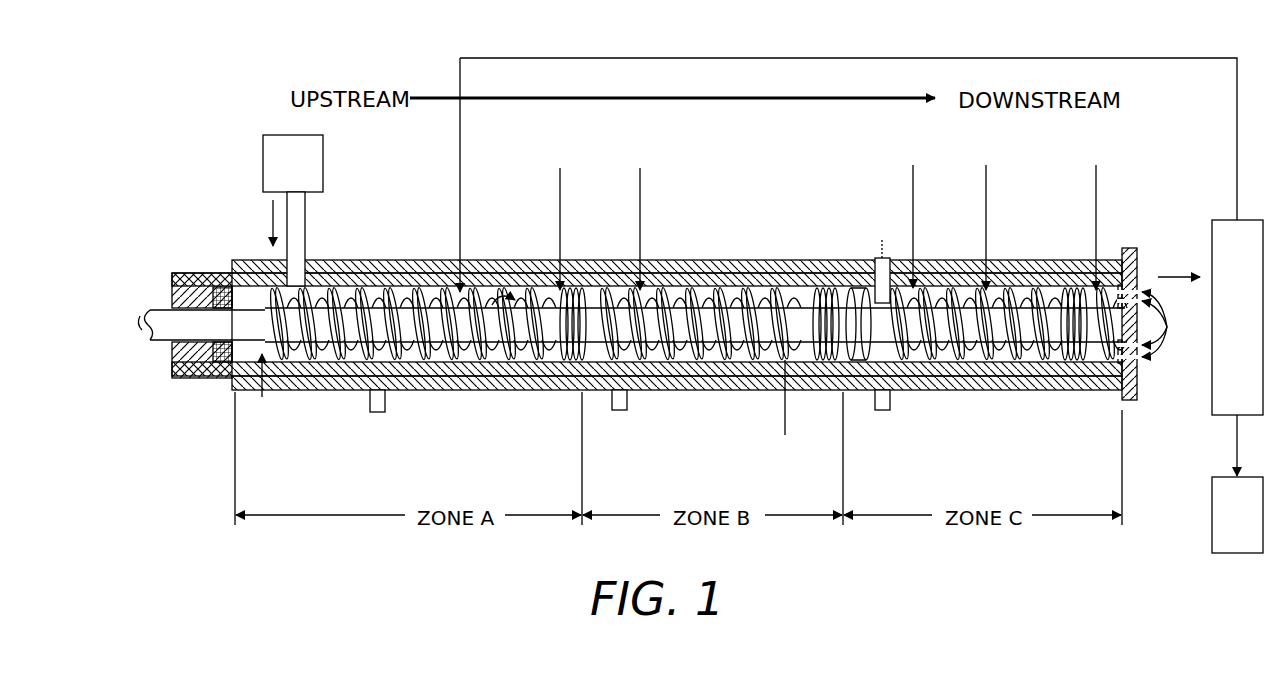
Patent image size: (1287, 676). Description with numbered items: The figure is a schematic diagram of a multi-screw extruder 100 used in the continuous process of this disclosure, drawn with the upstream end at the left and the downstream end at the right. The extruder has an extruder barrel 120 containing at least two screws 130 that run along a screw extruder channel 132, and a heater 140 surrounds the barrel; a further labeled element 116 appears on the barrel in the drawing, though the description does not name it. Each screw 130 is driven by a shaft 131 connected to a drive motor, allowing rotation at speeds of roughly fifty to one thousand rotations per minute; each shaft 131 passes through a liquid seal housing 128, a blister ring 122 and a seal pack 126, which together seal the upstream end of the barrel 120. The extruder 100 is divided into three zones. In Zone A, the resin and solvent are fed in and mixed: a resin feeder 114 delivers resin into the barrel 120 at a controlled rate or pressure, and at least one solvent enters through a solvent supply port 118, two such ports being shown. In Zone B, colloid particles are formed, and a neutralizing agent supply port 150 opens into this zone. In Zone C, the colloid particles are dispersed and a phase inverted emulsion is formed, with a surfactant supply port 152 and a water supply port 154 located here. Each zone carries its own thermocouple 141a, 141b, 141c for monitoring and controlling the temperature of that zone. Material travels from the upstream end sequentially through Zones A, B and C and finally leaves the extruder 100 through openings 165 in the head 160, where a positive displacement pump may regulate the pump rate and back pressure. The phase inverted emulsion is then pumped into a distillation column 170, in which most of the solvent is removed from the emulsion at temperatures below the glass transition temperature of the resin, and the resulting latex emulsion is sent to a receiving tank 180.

The multi-screw extruder 100 is at (230, 118).
The resin feeder 114 is at (263, 172).
The barrel 116 is at (560, 398).
The solvent supply port 118 is at (460, 183).
The extruder barrel 120 is at (198, 271).
The blister ring 122 is at (212, 302).
The seal pack 126 is at (233, 378).
The liquid seal housing 128 is at (182, 348).
The screw 130 is at (383, 285).
The shaft 131 is at (165, 338).
The screw extruder channel 132 is at (517, 272).
The heater 140 is at (262, 262).
The thermocouple 141a is at (385, 411).
The thermocouple 141b is at (627, 410).
The thermocouple 141c is at (890, 410).
The neutralizing agent supply port 150 is at (619, 216).
The surfactant supply port 152 is at (913, 197).
The water supply port 154 is at (986, 182).
The head 160 is at (1130, 268).
The openings 165 is at (1177, 324).
The distillation column 170 is at (1228, 218).
The receiving tank 180 is at (1210, 500).